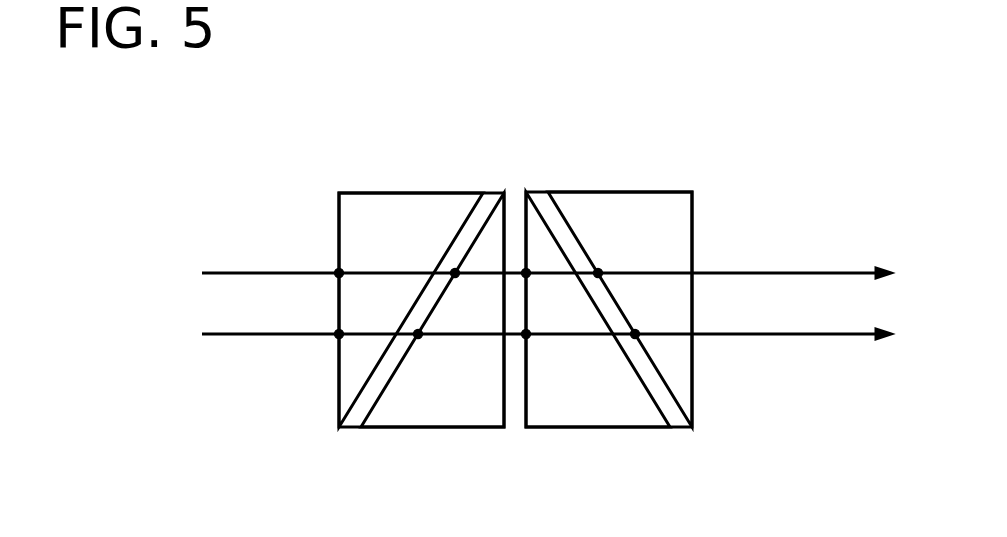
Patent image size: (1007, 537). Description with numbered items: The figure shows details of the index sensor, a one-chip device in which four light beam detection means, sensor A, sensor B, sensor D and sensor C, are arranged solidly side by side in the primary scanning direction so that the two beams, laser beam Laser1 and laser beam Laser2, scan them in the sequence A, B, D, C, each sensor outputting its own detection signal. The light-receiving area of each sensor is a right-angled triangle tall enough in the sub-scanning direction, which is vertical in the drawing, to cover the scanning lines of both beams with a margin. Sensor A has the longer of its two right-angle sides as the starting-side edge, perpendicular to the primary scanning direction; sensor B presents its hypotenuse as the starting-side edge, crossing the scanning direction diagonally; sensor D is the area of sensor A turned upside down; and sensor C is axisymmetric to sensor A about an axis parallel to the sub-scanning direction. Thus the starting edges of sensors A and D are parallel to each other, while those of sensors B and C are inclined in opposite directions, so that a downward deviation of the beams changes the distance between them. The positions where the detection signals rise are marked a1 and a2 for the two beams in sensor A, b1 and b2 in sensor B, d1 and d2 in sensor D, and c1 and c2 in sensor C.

The index sensor is at (514, 290).
The sensor A is at (411, 310).
The sensor B is at (432, 310).
The sensor C is at (620, 309).
The sensor D is at (598, 310).
The laser beam L1 Laser1 is at (516, 256).
The laser beam L2 Laser2 is at (516, 318).
The start detecting position of laser beam L1 in sensor A a1 is at (357, 287).
The start detecting position of laser beam L1 in sensor B b1 is at (473, 287).
The start detecting position of laser beam L2 in sensor A a2 is at (357, 350).
The start detecting position of laser beam L2 in sensor B b2 is at (436, 350).
The start detecting position of laser beam L1 in sensor C c1 is at (621, 287).
The start detecting position of laser beam L1 in sensor D d1 is at (544, 287).
The start detecting position of laser beam L2 in sensor C c2 is at (658, 350).
The start detecting position of laser beam L2 in sensor D d2 is at (544, 350).